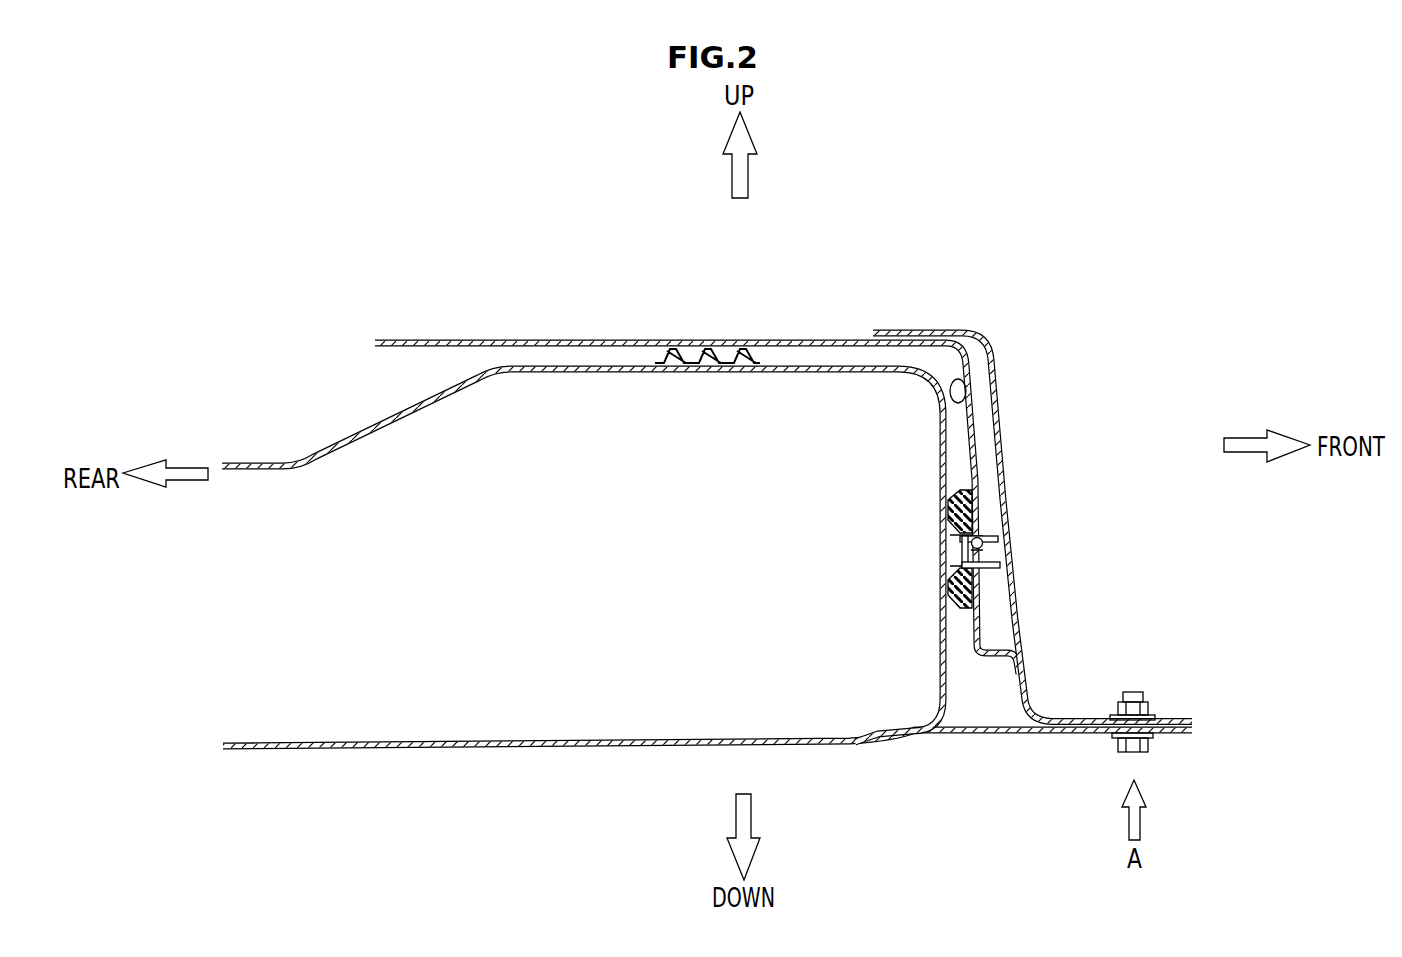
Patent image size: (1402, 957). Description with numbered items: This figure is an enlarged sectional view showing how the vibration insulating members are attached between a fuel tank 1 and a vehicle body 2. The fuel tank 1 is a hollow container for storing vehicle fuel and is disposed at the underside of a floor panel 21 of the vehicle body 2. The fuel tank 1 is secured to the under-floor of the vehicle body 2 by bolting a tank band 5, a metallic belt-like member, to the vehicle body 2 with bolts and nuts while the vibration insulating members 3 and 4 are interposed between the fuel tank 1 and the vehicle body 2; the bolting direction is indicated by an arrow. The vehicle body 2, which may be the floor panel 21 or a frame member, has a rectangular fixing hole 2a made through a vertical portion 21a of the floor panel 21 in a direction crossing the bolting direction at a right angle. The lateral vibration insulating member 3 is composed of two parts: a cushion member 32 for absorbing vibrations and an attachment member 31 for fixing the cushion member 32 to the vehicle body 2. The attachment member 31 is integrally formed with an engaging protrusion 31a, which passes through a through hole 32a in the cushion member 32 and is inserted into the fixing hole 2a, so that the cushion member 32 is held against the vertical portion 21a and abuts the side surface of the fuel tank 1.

The fuel tank 1 is at (338, 446).
The vehicle body 2 is at (973, 323).
The fixing hole 2a is at (993, 558).
The vibration insulating member 3 is at (1144, 528).
The vibration insulating member 4 is at (756, 351).
The tank band 5 is at (977, 733).
The floor panel 21 is at (462, 340).
The vertical portion 21a is at (969, 379).
The attachment member 31 is at (984, 565).
The engaging protrusion 31a is at (982, 543).
The cushion member 32 is at (968, 595).
The through hole 32a is at (982, 537).